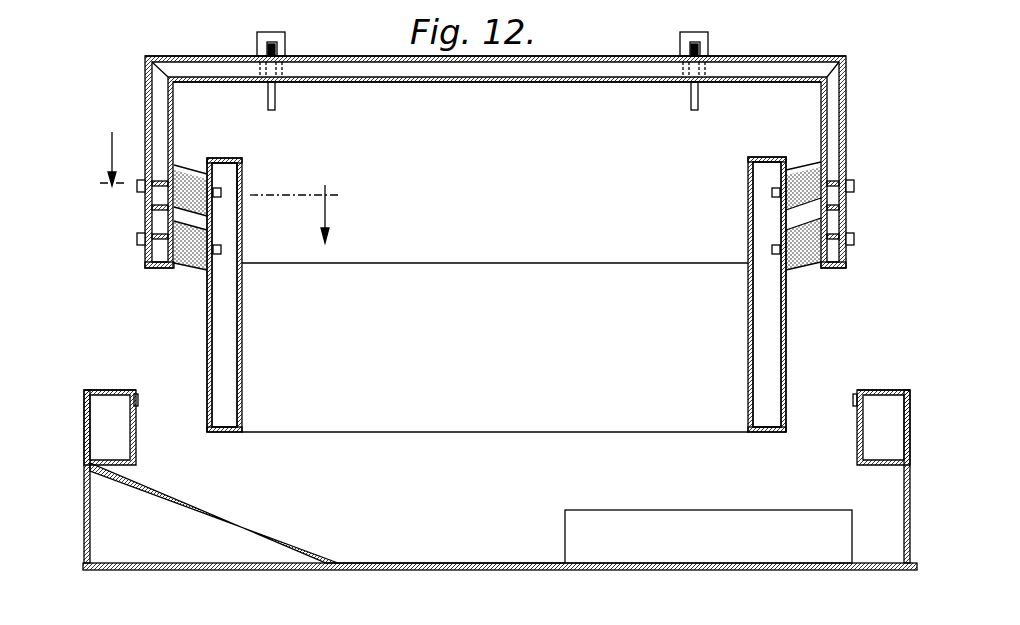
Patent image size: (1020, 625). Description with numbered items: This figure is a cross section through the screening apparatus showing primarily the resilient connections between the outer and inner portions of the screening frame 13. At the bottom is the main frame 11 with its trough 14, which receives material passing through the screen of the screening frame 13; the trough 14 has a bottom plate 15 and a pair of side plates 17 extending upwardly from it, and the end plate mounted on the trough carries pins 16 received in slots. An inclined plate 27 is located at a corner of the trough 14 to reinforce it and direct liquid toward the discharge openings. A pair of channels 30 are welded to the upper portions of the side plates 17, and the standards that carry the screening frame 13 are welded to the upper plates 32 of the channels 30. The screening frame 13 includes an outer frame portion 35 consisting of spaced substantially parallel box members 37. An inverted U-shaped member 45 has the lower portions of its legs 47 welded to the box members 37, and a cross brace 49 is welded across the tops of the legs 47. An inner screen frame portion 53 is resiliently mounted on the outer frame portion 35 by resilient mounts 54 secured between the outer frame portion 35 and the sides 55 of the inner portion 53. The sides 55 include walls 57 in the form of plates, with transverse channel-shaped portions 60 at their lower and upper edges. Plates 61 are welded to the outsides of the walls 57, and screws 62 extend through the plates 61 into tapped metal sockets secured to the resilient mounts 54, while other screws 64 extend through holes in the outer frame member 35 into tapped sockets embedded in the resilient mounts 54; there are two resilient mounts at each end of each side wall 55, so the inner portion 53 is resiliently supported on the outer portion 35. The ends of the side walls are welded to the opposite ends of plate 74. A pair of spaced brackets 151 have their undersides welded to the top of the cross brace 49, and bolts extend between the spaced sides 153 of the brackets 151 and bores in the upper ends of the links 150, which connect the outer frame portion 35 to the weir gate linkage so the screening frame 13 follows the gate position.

The main frame 11 is at (738, 571).
The screening frame 13 is at (785, 433).
The trough 14 is at (428, 562).
The bottom plate 15 is at (495, 571).
The pins 16 is at (221, 187).
The side plates 17 is at (83, 521).
The inclined plate 27 is at (238, 522).
The channels 30 is at (136, 460).
The upper plates 32 is at (106, 390).
The outer frame portion 35 is at (150, 269).
The box members 37 is at (145, 217).
The inverted U-shaped member 45 is at (437, 83).
The legs 47 is at (145, 116).
The cross brace 49 is at (540, 83).
The inner screen frame portion 53 is at (245, 178).
The resilient mounts 54 is at (188, 166).
The sides 55 is at (243, 300).
The walls 57 is at (243, 343).
The channel-shaped portions 60 is at (238, 158).
The plates 61 is at (207, 340).
The screws 62 is at (222, 250).
The screws 64 is at (137, 241).
The plate 74 is at (452, 433).
The links 150 is at (276, 97).
The brackets 151 is at (285, 33).
The sides 153 is at (257, 45).